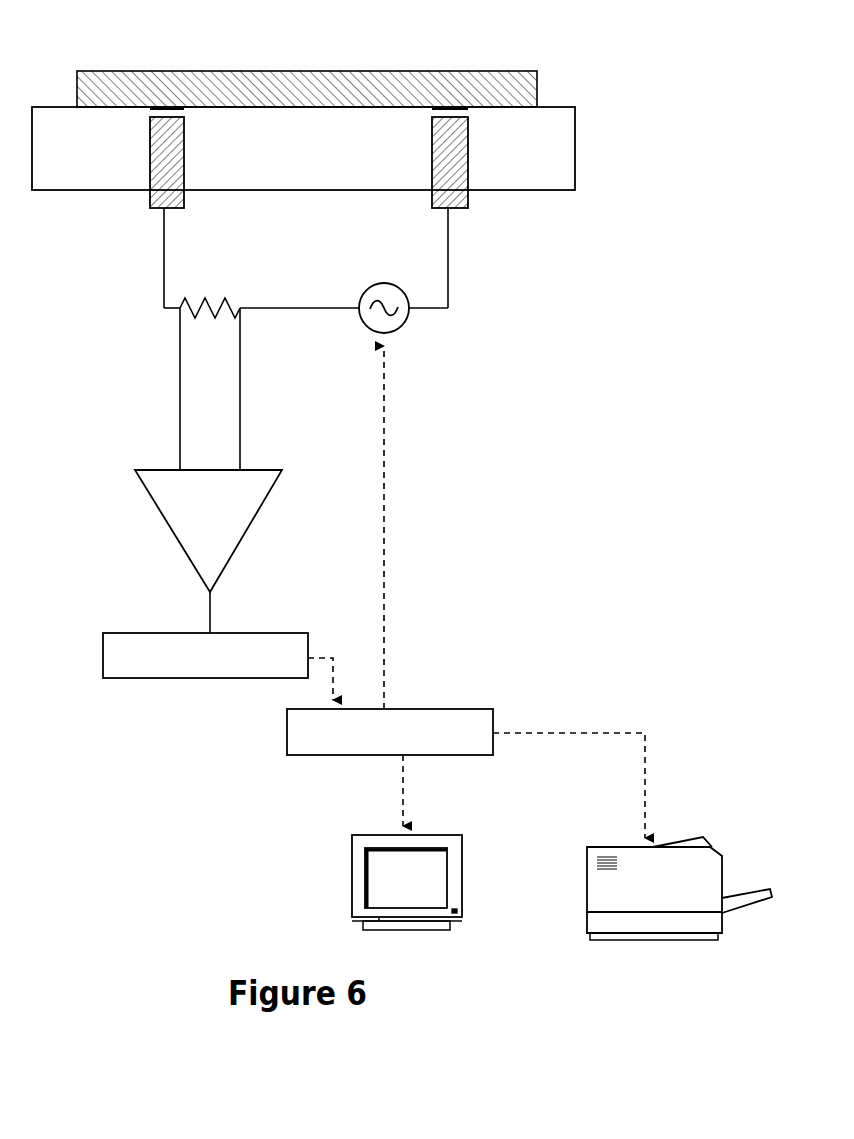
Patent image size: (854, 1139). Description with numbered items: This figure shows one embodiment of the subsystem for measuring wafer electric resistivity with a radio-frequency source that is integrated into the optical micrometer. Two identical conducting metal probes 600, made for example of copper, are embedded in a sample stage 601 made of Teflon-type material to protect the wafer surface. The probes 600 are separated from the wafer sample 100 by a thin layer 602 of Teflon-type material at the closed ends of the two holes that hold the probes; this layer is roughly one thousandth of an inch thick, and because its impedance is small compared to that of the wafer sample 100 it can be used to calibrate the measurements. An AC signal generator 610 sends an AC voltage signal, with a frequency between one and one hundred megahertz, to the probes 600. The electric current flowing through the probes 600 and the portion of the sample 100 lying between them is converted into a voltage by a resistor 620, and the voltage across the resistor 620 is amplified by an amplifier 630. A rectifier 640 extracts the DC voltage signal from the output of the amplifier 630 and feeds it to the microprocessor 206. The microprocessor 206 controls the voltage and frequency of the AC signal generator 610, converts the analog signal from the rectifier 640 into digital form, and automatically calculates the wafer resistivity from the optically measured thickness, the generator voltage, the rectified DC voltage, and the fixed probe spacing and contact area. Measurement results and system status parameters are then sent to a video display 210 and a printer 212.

The wafer sample 100 is at (355, 71).
The sample stage 601 is at (353, 152).
The thin layer 602 is at (183, 111).
The conducting metal probes 600 is at (184, 175).
The resistor 620 is at (225, 302).
The AC signal generator 610 is at (398, 328).
The amplifier 630 is at (260, 470).
The rectifier 640 is at (260, 633).
The microprocessor 206 is at (468, 709).
The video display 210 is at (442, 835).
The printer 212 is at (713, 848).